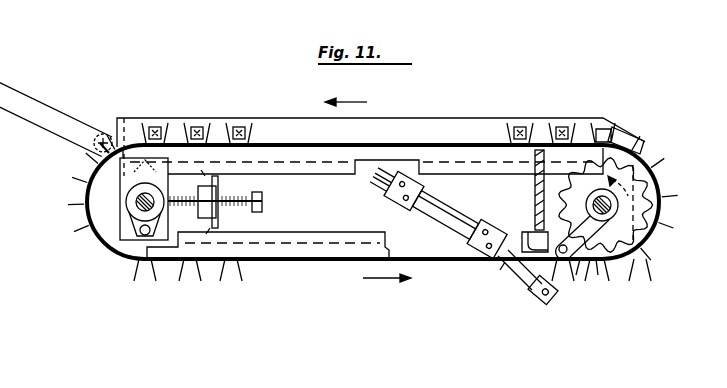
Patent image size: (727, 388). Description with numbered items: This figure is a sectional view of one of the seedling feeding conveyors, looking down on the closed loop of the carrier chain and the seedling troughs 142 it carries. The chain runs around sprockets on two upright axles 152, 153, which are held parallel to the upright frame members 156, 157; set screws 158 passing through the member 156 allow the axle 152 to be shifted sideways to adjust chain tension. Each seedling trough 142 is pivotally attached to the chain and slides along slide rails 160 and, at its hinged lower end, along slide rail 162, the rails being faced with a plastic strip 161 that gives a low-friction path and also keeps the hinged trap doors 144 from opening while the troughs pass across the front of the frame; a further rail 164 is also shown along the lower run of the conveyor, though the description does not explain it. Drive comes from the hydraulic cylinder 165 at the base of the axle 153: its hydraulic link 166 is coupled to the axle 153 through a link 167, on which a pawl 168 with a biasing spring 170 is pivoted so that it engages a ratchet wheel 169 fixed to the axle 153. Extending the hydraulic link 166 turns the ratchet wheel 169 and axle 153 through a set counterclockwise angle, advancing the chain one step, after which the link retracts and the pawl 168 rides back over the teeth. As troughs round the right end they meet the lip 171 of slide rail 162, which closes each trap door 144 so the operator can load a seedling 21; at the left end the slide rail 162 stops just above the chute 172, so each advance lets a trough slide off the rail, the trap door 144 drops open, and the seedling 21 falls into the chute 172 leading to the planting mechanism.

The tree seedling 21 is at (153, 127).
The seedling trough 142 is at (252, 128).
The hinged trap door 144 is at (237, 127).
The axle 152 is at (138, 203).
The axle 153 is at (643, 237).
The member 156 is at (216, 218).
The member 157 is at (535, 190).
The set screw 158 is at (262, 198).
The slide rail 160 is at (329, 160).
The plastic strip 161 is at (96, 150).
The slide rail 162 is at (430, 125).
The lower guide bar 164 is at (277, 260).
The hydraulic cylinder 165 is at (418, 210).
The hydraulic link 166 is at (505, 286).
The link 167 is at (556, 283).
The pawl 168 is at (595, 275).
The ratchet wheel 169 is at (643, 162).
The biasing spring 170 is at (526, 230).
The lip 171 is at (632, 135).
The chute 172 is at (34, 97).